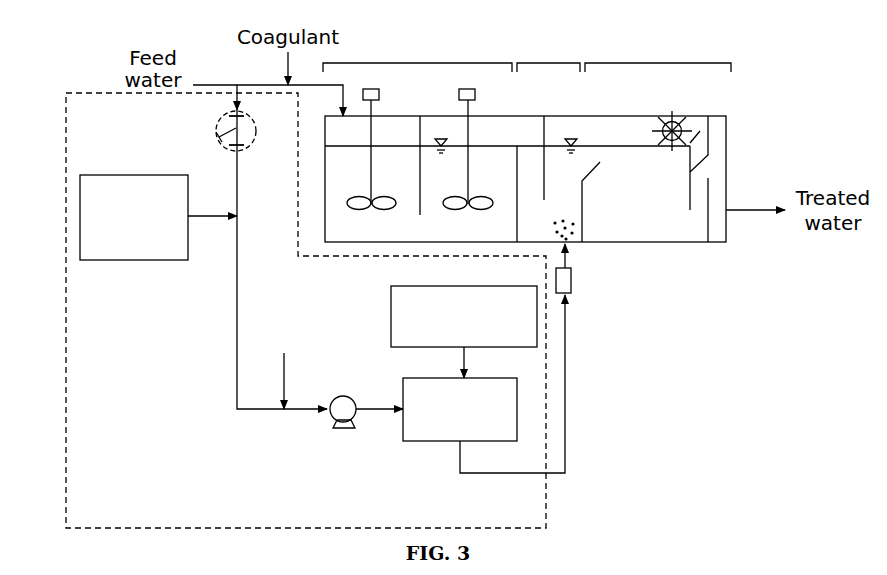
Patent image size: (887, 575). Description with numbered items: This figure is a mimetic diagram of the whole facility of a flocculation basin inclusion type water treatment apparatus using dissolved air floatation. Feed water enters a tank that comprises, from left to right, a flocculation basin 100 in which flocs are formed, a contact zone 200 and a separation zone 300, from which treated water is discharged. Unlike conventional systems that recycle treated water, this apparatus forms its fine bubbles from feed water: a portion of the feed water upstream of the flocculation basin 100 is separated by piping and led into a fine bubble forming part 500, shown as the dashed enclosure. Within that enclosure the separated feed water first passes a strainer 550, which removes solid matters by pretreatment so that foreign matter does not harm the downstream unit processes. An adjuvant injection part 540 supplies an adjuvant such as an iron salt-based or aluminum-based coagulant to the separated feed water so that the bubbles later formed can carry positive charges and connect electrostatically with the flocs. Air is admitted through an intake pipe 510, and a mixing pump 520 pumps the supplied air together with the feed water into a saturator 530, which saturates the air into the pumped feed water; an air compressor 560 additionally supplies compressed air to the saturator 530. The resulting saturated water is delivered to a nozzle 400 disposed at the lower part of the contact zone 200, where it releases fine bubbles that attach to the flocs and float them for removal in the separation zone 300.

The flocculation basin 100 is at (415, 62).
The contact zone 200 is at (548, 62).
The separation zone 300 is at (656, 62).
The nozzle 400 is at (572, 279).
The fine bubble forming part 500 is at (12, 233).
The intake pipe 510 is at (284, 372).
The mixing pump 520 is at (345, 430).
The saturator 530 is at (448, 443).
The adjuvant injection part 540 is at (149, 261).
The strainer 550 is at (250, 145).
The air compressor 560 is at (391, 318).